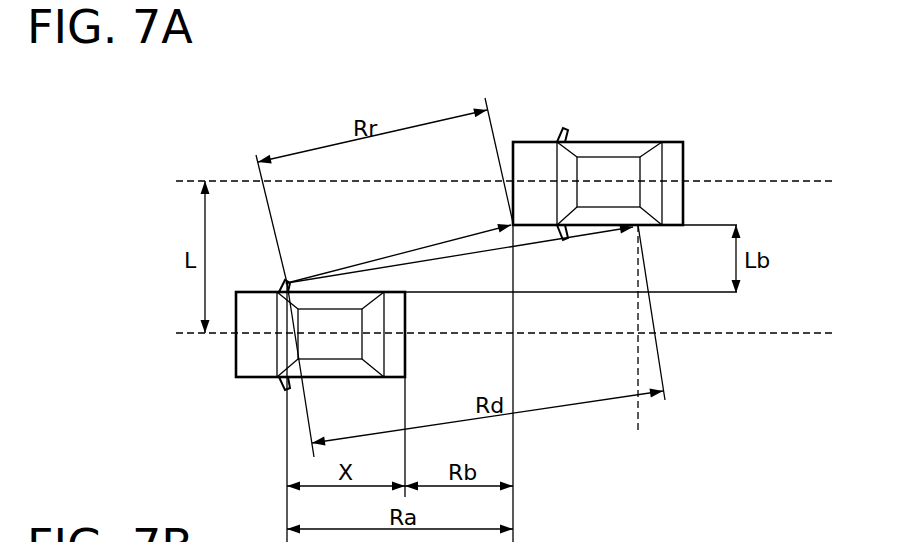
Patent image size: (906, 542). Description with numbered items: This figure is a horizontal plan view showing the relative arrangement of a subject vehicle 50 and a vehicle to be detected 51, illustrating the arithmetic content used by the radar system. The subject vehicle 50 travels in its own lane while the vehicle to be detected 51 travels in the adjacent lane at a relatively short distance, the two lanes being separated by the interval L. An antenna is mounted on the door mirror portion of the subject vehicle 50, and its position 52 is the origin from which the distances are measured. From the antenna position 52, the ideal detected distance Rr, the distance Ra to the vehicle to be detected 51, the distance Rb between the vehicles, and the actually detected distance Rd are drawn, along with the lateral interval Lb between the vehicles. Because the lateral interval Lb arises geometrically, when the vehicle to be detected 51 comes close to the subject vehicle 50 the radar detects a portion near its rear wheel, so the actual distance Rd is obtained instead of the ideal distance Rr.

The subject vehicle 50 is at (236, 352).
The vehicle to be detected 51 is at (618, 142).
The position of an antenna 52 is at (290, 282).